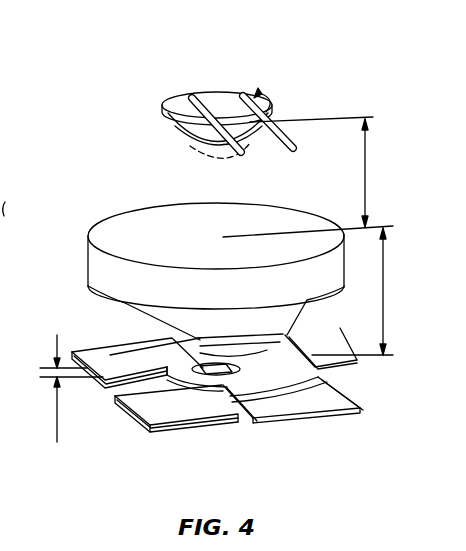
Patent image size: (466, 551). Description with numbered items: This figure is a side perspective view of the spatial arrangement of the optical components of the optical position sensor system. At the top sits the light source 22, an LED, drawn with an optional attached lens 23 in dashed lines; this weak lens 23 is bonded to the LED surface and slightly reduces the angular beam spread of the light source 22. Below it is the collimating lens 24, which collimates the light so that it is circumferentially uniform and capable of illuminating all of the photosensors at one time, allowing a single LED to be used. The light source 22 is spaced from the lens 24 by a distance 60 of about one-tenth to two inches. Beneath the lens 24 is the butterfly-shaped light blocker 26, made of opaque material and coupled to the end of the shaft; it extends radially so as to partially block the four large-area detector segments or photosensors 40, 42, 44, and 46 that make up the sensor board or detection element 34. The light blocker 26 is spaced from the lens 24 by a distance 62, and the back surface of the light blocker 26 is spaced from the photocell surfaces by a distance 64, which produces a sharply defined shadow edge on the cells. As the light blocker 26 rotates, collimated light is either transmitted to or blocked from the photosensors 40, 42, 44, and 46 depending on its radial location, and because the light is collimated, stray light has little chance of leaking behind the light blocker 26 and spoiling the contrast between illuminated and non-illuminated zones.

The light source 22 is at (215, 104).
The lens 23 is at (192, 147).
The lens 24 is at (150, 230).
The light blocker 26 is at (268, 378).
The detection element 34 is at (201, 398).
The photosensor 40 is at (162, 408).
The photosensor 42 is at (317, 400).
The photosensor 44 is at (95, 360).
The photosensor 46 is at (280, 352).
The distance 60 is at (366, 182).
The distance 62 is at (384, 317).
The distance 64 is at (56, 404).